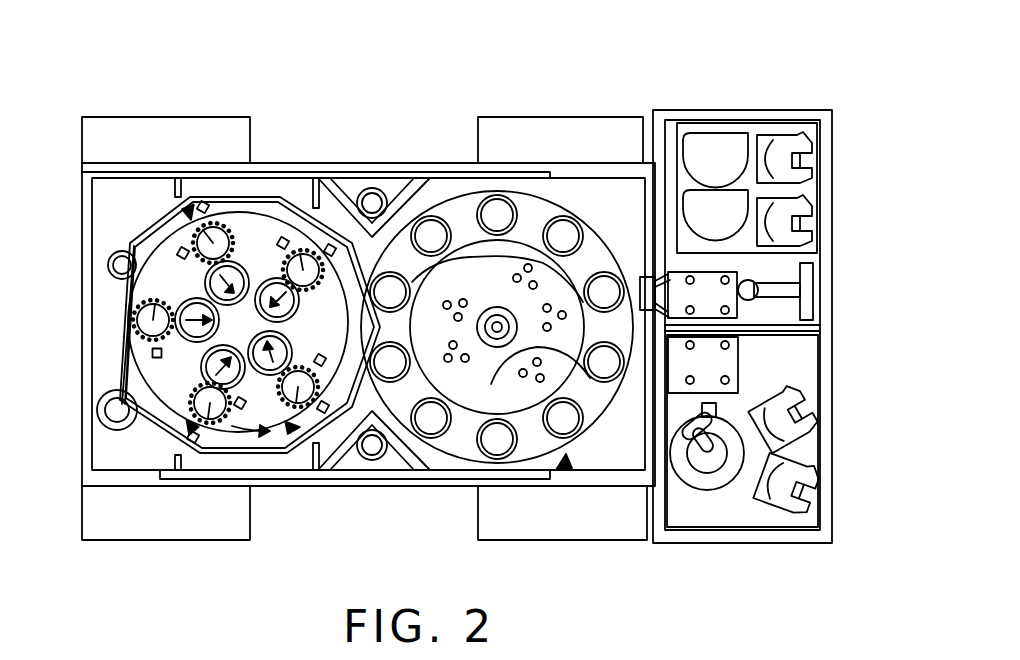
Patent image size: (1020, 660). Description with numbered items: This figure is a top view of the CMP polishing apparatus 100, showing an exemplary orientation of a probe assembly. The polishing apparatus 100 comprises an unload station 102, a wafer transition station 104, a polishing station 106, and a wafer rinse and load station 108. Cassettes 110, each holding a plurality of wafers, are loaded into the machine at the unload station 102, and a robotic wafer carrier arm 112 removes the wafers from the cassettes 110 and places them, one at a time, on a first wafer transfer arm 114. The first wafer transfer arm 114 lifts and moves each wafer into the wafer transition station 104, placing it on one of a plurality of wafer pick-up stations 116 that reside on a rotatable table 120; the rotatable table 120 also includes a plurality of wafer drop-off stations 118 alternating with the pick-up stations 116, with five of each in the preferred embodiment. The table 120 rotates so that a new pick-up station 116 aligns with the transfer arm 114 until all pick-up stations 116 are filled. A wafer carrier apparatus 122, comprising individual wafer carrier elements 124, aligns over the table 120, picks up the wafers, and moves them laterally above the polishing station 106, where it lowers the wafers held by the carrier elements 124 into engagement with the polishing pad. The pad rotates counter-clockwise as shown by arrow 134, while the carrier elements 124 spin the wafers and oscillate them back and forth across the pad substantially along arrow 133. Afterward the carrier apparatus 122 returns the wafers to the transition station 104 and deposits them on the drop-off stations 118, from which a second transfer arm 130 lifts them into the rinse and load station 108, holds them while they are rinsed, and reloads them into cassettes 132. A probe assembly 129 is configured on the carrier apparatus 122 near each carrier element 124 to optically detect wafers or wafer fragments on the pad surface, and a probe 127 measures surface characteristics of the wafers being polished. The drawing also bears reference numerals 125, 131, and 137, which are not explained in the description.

The polishing apparatus 100 is at (511, 84).
The unload station 102 is at (750, 508).
The wafer transition station 104 is at (553, 430).
The polishing station 106 is at (276, 163).
The wafer rinse and load station 108 is at (787, 104).
The cassettes 110 is at (798, 428).
The robotic wafer carrier arm 112 is at (712, 475).
The first wafer transfer arm 114 is at (568, 468).
The wafer pick-up stations 116 is at (434, 225).
The wafer drop-off stations 118 is at (500, 228).
The rotatable table 120 is at (461, 450).
The wafer carrier apparatus 122 is at (262, 442).
The wafer carrier elements 124 is at (213, 238).
The rotary carrier disc 125 is at (205, 268).
The probe 127 is at (200, 235).
The probe assembly 129 is at (282, 240).
The second transfer arm 130 is at (673, 272).
The inner plate 131 is at (173, 278).
The cassettes 132 is at (785, 146).
The arrow 133 is at (148, 330).
The arrow 134 is at (247, 437).
The pivot arm 137 is at (175, 402).